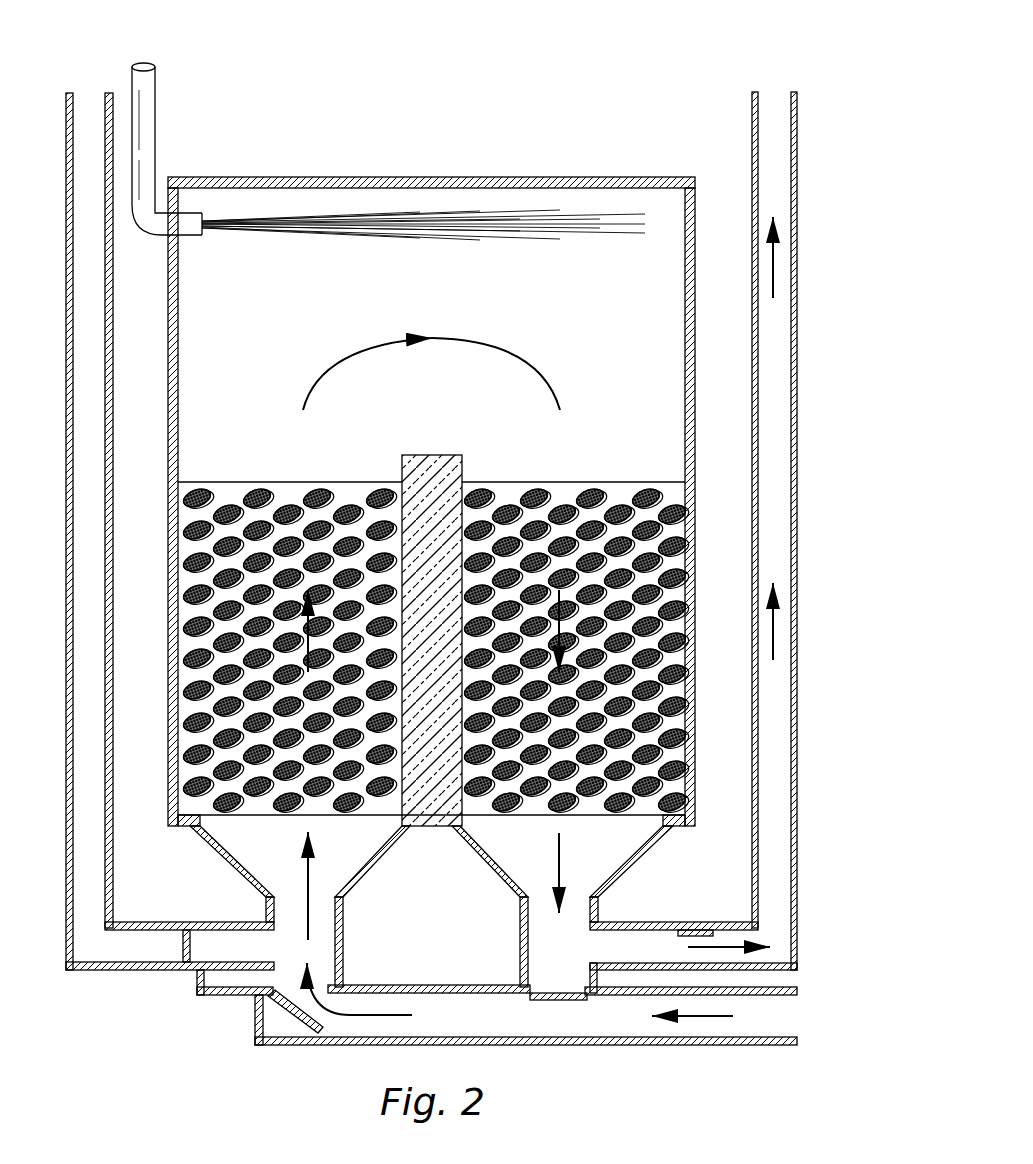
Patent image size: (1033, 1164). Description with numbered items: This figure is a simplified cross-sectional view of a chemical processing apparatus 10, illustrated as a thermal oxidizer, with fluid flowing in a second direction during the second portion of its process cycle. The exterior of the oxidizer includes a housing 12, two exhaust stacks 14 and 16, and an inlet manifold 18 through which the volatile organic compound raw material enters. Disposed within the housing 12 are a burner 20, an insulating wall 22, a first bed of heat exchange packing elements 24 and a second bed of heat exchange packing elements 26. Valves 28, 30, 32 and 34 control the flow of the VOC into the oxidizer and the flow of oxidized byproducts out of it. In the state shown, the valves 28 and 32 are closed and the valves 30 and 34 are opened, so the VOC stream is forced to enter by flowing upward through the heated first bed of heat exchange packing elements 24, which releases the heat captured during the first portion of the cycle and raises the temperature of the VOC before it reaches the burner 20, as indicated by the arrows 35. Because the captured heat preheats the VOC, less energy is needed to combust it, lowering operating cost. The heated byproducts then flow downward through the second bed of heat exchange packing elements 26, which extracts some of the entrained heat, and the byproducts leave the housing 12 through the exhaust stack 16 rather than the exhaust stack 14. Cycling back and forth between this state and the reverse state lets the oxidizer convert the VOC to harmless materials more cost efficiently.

The chemical processing apparatus 10 is at (510, 85).
The housing 12 is at (368, 177).
The exhaust stack 14 is at (113, 462).
The exhaust stack 16 is at (752, 125).
The inlet manifold 18 is at (600, 1045).
The burner 20 is at (190, 235).
The insulating wall 22 is at (438, 455).
The first bed of heat exchange packing elements 24 is at (297, 520).
The second bed of heat exchange packing elements 26 is at (568, 525).
The valve 28 is at (185, 948).
The valve 30 is at (297, 1013).
The valve 32 is at (552, 1000).
The valve 34 is at (660, 950).
The arrows 35 is at (773, 262).